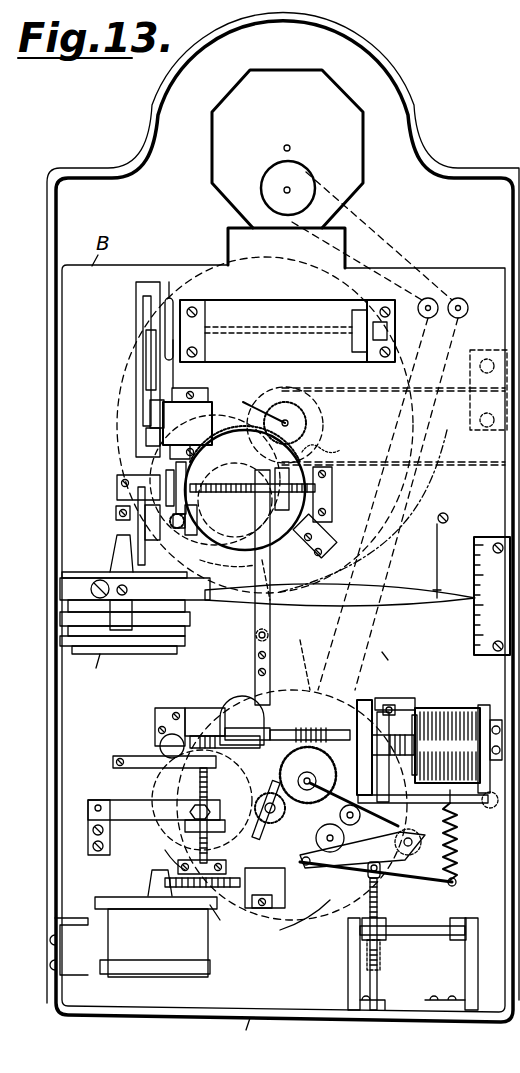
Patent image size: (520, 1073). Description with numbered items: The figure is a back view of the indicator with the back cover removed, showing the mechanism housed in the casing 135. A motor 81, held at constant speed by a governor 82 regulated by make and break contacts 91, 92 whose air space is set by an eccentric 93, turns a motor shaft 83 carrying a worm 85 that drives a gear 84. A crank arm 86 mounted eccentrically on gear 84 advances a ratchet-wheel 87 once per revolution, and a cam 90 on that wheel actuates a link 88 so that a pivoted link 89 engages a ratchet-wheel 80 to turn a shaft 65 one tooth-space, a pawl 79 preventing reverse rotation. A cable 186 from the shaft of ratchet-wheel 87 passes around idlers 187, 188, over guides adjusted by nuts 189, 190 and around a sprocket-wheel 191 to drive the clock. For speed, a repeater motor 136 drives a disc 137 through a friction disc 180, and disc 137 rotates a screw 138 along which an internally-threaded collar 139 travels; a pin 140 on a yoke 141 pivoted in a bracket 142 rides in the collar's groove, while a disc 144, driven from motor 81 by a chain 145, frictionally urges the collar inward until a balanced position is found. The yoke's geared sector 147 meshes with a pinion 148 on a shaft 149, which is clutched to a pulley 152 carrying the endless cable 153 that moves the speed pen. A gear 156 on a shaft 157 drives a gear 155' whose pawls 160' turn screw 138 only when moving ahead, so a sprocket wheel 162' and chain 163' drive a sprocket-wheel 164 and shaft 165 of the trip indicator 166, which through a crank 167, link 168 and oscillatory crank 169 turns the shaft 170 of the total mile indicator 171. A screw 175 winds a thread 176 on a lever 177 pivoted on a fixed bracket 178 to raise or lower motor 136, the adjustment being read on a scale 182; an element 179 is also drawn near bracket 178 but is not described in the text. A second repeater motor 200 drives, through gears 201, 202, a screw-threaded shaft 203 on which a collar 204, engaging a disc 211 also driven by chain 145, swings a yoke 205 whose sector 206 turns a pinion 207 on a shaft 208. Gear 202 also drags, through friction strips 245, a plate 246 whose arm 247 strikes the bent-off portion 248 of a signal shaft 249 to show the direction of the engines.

The sprocket-wheel 191 is at (288, 180).
The nut 190 is at (468, 305).
The nut 189 is at (428, 318).
The sprocket-wheel 164 is at (172, 300).
The shaft 165 is at (273, 331).
The trip indicator 166 is at (300, 300).
The crank 167 is at (140, 310).
The link 168 is at (146, 370).
The oscillatory crank 169 is at (146, 440).
The shaft 170 is at (150, 412).
The total mile indicator 171 is at (187, 430).
The chain 163' is at (192, 371).
The sprocket wheel 162' is at (138, 488).
The shaft 149 is at (253, 404).
The pinion 148 is at (285, 414).
The pulley 152 is at (320, 410).
The geared sector 147 is at (334, 444).
The endless cable 153 is at (472, 468).
The pawls 160' is at (215, 480).
The internally-threaded collar 139 is at (245, 488).
The gear 155' is at (240, 489).
The screw 138 is at (324, 512).
The screw 175 is at (449, 516).
The cable or thread 176 is at (437, 556).
The lever 177 is at (340, 595).
The friction disc 180 is at (112, 545).
The disc 137 is at (145, 560).
The shaft 157 is at (175, 535).
The gear 156 is at (197, 530).
The pin 140 is at (235, 506).
The disc 144 is at (227, 567).
The yoke 141 is at (270, 575).
The bar 179 is at (128, 590).
The bracket 142 is at (268, 634).
The fixed bracket 178 is at (178, 628).
The chain 145 is at (318, 650).
The cable 186 is at (401, 656).
The scale 182 is at (472, 630).
The repeater motor 136 is at (95, 671).
The contact 91 is at (170, 708).
The contact 92 is at (224, 700).
The eccentric 93 is at (160, 744).
The governor 82 is at (222, 728).
The worm 85 is at (310, 724).
The motor shaft 83 is at (360, 710).
The motor 81 is at (450, 708).
The gear 84 is at (308, 775).
The crank arm 86 is at (354, 796).
The idler 188 is at (392, 757).
The yoke 205 is at (162, 775).
The screw-threaded shaft 203 is at (202, 800).
The disc 211 is at (224, 815).
The pinion 207 is at (268, 794).
The shaft 208 is at (275, 814).
The collar 204 is at (156, 827).
The sector 206 is at (268, 812).
The idler 187 is at (316, 838).
The cam 90 is at (362, 848).
The ratchet-wheel 87 is at (457, 850).
The gear 202 is at (160, 856).
The bent-off portion 248 is at (216, 867).
The link 88 is at (430, 878).
The gear 201 is at (140, 886).
The friction strips 245 is at (180, 887).
The link 89 is at (368, 876).
The plate 246 is at (226, 922).
The arm 247 is at (262, 910).
The shaft 249 is at (309, 915).
The ratchet-wheel 80 is at (378, 912).
The repeater motor 200 is at (208, 950).
The shaft 65 is at (425, 935).
The pawl 79 is at (380, 978).
The casing 135 is at (247, 1037).